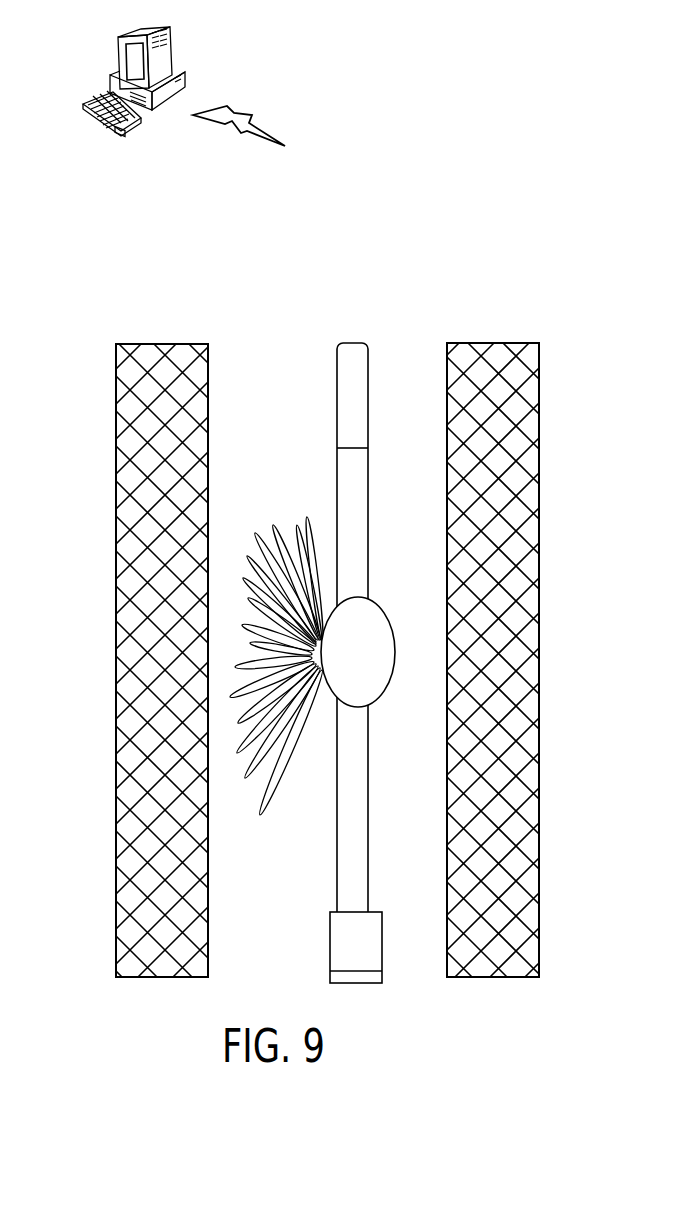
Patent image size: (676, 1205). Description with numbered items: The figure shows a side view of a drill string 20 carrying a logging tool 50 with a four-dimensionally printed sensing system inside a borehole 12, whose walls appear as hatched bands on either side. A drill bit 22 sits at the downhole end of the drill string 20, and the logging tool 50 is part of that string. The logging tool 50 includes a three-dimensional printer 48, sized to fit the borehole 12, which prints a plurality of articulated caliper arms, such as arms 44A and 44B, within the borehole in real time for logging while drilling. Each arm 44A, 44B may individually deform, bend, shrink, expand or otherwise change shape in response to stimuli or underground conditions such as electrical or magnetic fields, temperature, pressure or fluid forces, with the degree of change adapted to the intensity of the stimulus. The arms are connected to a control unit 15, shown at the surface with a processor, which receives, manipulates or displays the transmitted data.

The control unit 15 is at (116, 56).
The borehole 12 is at (418, 436).
The drill string 20 is at (357, 415).
The drill bit 22 is at (370, 942).
The logging tool 50 is at (244, 642).
The 3D printer 48 is at (375, 641).
The 4D printed caliper arm 44A is at (297, 643).
The 4D printed caliper arm 44B is at (282, 567).